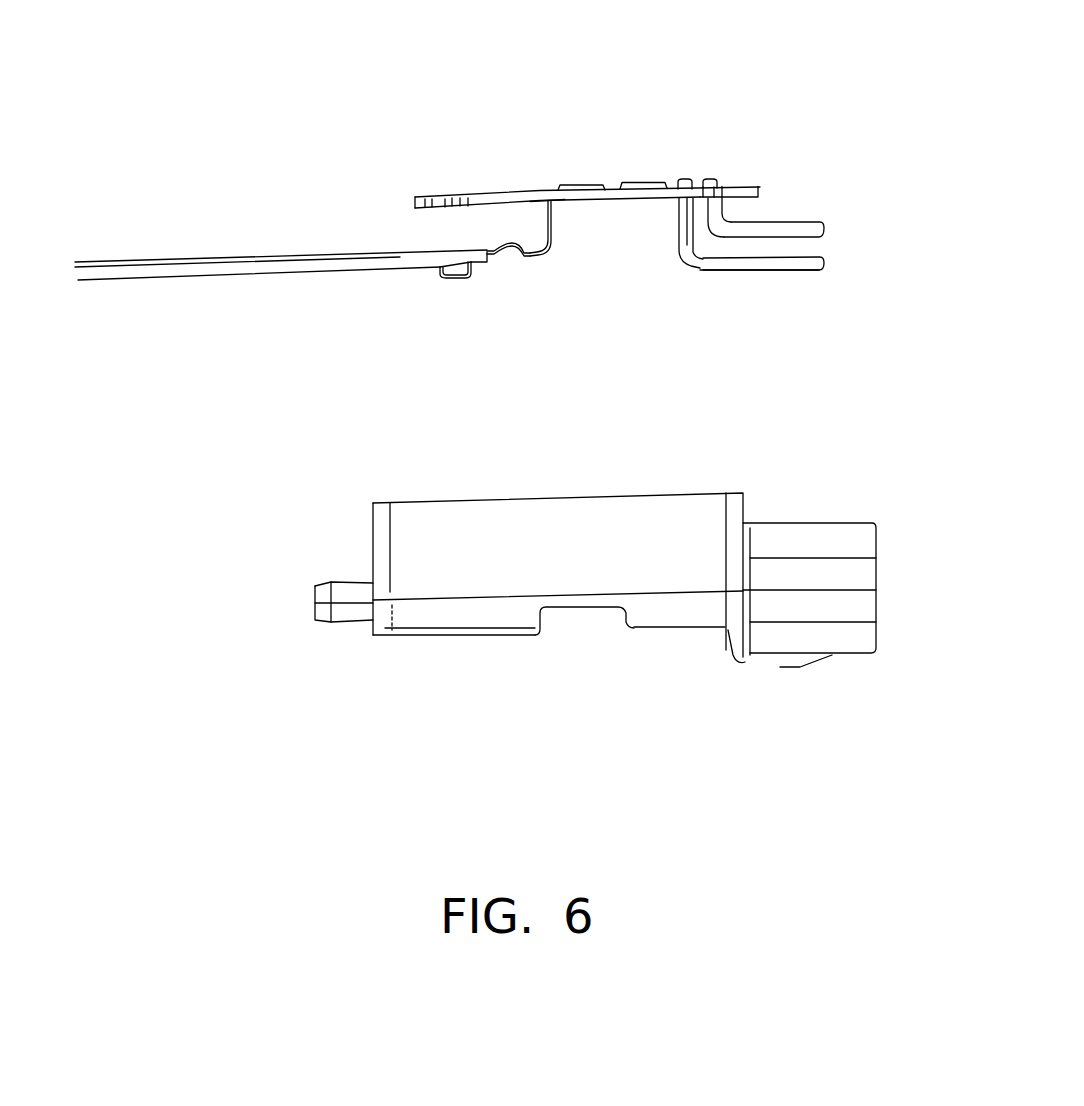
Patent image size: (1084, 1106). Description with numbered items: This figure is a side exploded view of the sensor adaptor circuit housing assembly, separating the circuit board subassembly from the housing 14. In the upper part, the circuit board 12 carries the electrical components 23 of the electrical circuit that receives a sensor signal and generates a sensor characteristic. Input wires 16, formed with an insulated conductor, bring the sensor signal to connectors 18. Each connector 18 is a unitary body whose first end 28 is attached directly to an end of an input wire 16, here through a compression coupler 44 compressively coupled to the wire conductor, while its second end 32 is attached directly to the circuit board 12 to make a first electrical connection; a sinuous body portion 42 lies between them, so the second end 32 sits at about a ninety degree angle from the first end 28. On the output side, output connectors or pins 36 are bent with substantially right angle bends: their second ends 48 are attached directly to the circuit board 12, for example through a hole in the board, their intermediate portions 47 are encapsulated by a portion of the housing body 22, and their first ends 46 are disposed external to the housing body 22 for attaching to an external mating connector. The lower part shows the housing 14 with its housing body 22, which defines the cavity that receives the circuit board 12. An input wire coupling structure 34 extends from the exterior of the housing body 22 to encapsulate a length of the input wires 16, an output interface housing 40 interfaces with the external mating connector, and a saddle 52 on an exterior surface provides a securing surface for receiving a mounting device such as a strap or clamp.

The circuit board 12 is at (432, 203).
The housing 14 is at (438, 660).
The input wires 16 is at (207, 270).
The connectors 18 is at (557, 259).
The housing body 22 is at (383, 535).
The electrical components 23 is at (577, 185).
The first end 28 is at (430, 285).
The second end 32 is at (547, 188).
The input wire coupling structure 34 is at (345, 610).
The output connectors or pins 36 is at (781, 292).
The output interface housing 40 is at (845, 538).
The sinuous body portions 42 is at (522, 256).
The compression couplers 44 is at (457, 268).
The first end 46 is at (823, 225).
The intermediate portions 47 is at (720, 234).
The second ends 48 is at (686, 179).
The saddle 52 is at (585, 642).